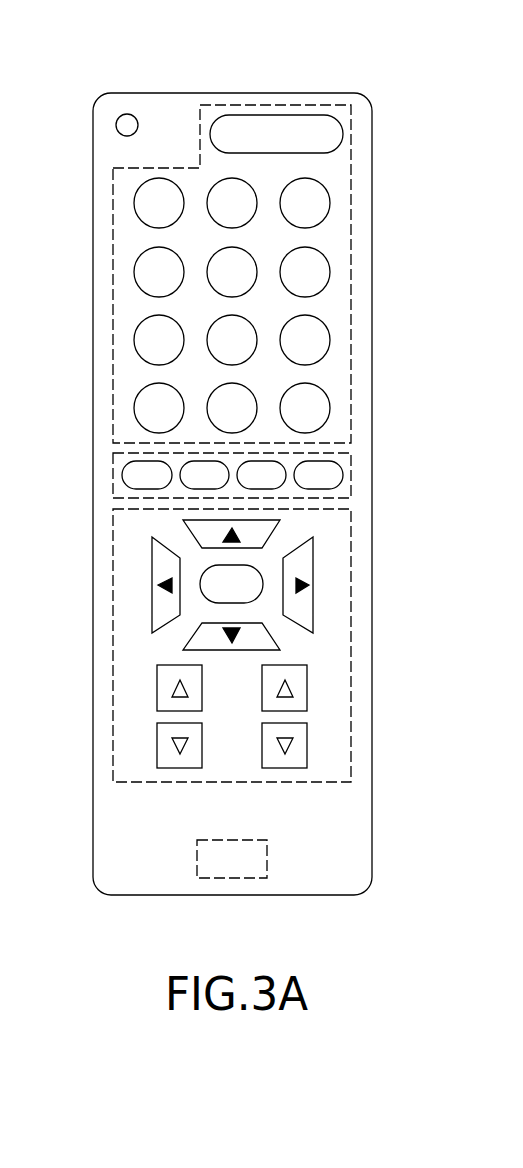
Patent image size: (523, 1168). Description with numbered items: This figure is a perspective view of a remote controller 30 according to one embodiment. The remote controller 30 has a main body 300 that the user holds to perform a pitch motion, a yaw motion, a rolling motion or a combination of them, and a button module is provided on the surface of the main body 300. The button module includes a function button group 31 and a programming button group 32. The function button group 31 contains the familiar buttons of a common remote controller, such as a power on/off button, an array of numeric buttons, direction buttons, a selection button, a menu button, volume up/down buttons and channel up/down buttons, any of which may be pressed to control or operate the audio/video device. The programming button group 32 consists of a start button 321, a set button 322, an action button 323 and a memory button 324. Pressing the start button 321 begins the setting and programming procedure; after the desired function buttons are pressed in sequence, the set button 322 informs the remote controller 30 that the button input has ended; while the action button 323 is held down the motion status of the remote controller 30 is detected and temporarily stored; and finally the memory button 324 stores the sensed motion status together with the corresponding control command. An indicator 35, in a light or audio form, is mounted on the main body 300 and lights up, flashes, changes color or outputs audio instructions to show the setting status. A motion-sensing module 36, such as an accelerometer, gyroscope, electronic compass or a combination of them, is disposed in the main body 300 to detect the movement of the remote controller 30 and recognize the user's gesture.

The remote controller 30 is at (320, 57).
The main body 300 is at (362, 197).
The indicator 35 is at (123, 117).
The function button group 31 is at (113, 248).
The programming button group 32 is at (115, 460).
The start button 321 is at (137, 477).
The set button 322 is at (200, 473).
The action button 323 is at (263, 473).
The memory button 324 is at (318, 473).
The motion-sensing module 36 is at (237, 867).